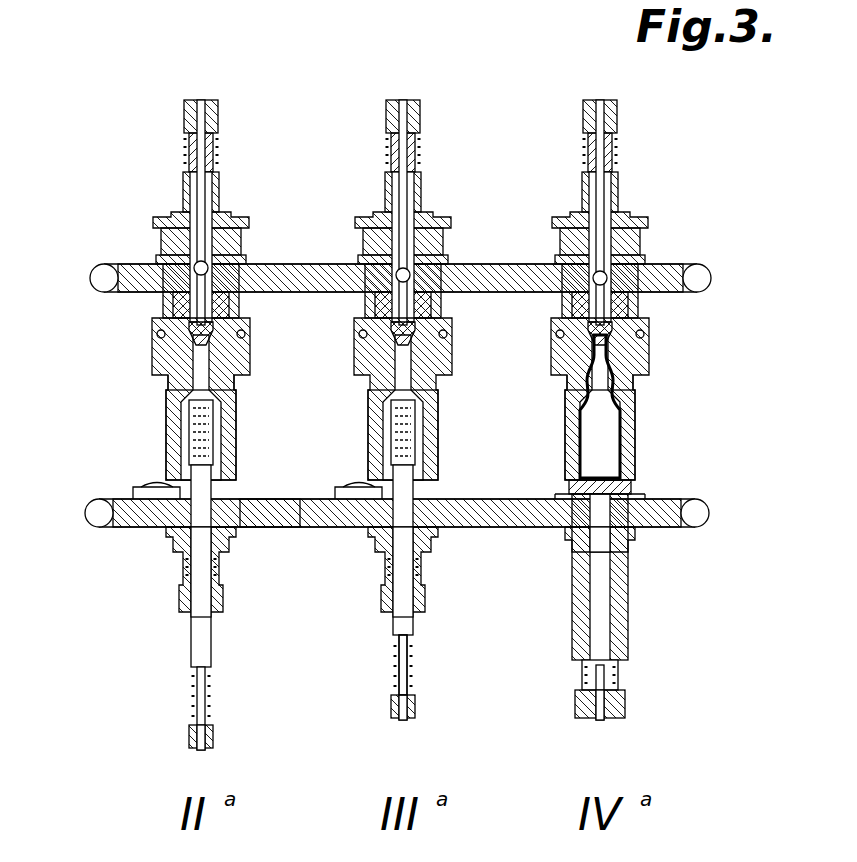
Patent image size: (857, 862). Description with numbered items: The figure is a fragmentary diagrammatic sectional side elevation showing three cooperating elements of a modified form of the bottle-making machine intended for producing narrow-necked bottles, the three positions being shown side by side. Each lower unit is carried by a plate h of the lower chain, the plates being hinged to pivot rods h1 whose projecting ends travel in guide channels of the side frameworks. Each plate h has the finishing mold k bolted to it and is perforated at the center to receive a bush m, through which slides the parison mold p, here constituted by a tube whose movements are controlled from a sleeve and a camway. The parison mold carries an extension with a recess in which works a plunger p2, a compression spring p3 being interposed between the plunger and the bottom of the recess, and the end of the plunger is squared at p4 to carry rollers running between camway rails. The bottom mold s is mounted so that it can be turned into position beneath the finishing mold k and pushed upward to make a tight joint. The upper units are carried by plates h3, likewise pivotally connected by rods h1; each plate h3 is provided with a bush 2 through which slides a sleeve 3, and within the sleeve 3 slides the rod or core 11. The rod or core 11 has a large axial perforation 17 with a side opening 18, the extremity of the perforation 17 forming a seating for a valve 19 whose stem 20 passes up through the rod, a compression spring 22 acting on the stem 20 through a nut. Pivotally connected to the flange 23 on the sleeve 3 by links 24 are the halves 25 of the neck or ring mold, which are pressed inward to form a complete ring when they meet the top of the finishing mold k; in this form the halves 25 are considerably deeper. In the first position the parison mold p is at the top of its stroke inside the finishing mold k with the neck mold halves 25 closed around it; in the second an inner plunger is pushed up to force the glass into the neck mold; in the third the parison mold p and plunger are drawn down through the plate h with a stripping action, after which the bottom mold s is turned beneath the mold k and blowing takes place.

The perforation 17 is at (196, 100).
The compression spring 22 is at (388, 148).
The rod or core 11 is at (176, 214).
The bush 2 is at (246, 253).
The sleeve 3 is at (250, 235).
The flange 23 is at (364, 318).
The stem 20 is at (176, 292).
The links 24 is at (160, 358).
The side opening 18 is at (230, 308).
The valve 19 is at (422, 322).
The halves of the neck or ring mold 25 is at (230, 388).
The finishing mold k is at (165, 420).
The parison mold p is at (382, 398).
The bottom mold s is at (350, 490).
The bush m is at (176, 540).
The plates h is at (272, 527).
The rods h1 is at (100, 510).
The plates h3 is at (130, 260).
The plunger p2 is at (595, 697).
The compression spring p3 is at (408, 665).
The squared portion p4 is at (186, 738).